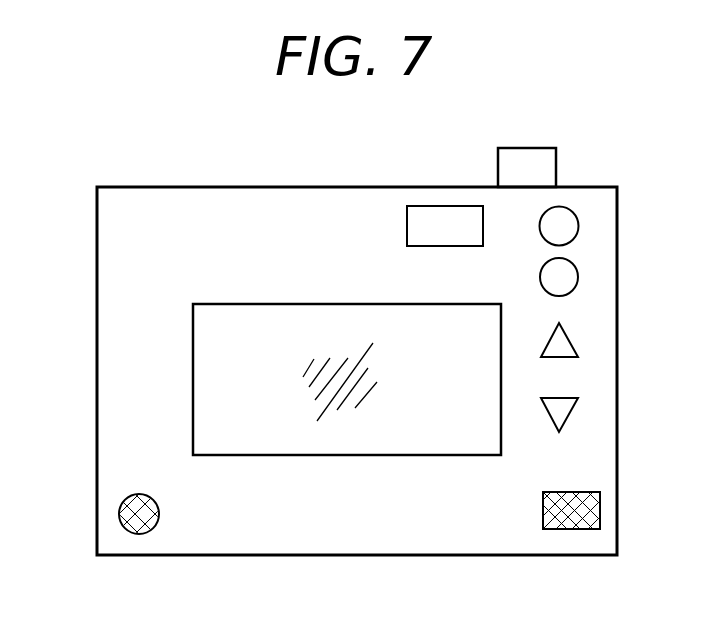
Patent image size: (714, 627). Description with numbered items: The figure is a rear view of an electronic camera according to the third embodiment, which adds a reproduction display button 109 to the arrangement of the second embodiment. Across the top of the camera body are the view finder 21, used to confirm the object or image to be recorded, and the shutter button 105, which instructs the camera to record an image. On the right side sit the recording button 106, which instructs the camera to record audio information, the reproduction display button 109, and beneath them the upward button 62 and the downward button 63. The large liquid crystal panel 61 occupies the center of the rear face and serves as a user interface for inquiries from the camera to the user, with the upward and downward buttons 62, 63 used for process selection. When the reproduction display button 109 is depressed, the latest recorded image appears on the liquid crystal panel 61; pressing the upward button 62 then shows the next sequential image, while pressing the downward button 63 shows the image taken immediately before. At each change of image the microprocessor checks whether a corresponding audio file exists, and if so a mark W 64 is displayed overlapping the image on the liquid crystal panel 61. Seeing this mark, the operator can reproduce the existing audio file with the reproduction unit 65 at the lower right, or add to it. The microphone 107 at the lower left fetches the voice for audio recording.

The view finder 21 is at (447, 206).
The shutter button 105 is at (556, 160).
The recording button 106 is at (578, 225).
The reproduction display button 109 is at (578, 277).
The upward button 62 is at (570, 340).
The downward button 63 is at (570, 410).
The reproduction unit 65 is at (600, 510).
The microphone 107 is at (119, 510).
The liquid crystal panel 61 is at (360, 440).
The mark W 64 is at (475, 340).